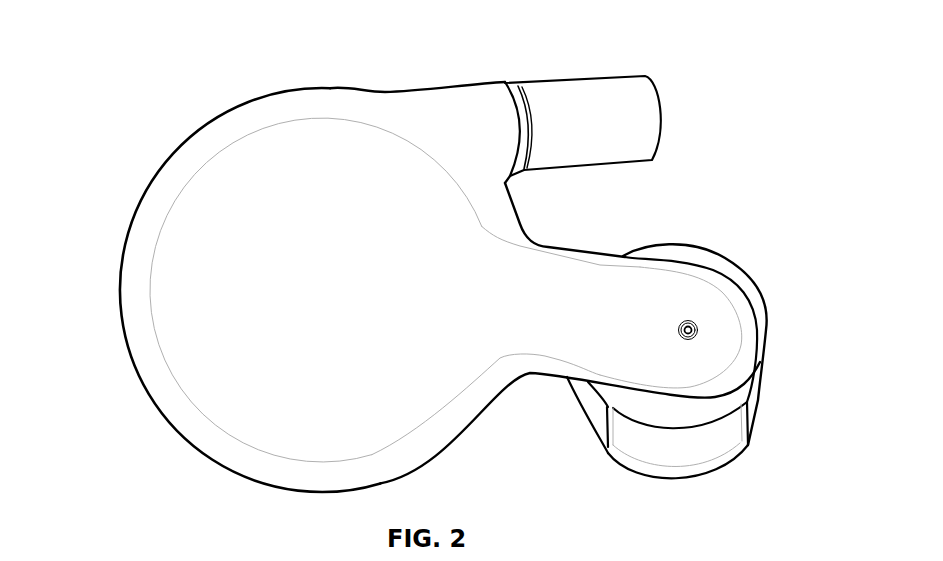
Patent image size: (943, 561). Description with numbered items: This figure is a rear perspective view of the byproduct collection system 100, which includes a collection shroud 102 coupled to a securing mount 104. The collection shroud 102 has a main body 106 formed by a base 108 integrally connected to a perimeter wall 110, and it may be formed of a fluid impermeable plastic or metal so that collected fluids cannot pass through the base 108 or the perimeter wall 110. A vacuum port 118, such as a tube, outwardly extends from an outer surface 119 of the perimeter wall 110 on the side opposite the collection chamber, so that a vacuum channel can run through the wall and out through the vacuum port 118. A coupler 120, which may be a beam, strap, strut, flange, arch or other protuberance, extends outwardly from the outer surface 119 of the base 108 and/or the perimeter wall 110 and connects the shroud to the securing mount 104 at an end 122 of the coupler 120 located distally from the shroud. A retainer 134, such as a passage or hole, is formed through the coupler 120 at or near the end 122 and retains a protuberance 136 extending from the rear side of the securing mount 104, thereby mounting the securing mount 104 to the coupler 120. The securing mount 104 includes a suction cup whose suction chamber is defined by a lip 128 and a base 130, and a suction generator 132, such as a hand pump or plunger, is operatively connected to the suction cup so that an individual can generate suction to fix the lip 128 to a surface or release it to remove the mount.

The byproduct collection system 100 is at (121, 78).
The collection shroud 102 is at (288, 84).
The securing mount 104 is at (703, 240).
The main body 106 is at (342, 88).
The base 108 is at (352, 210).
The perimeter wall 110 is at (213, 120).
The vacuum port 118 is at (570, 100).
The outer surface 119 is at (197, 216).
The coupler 120 is at (577, 278).
The end 122 is at (729, 300).
The lip 128 is at (714, 258).
The base 130 is at (752, 364).
The suction generator 132 is at (637, 454).
The retainer 134 is at (701, 333).
The protuberance 136 is at (687, 321).